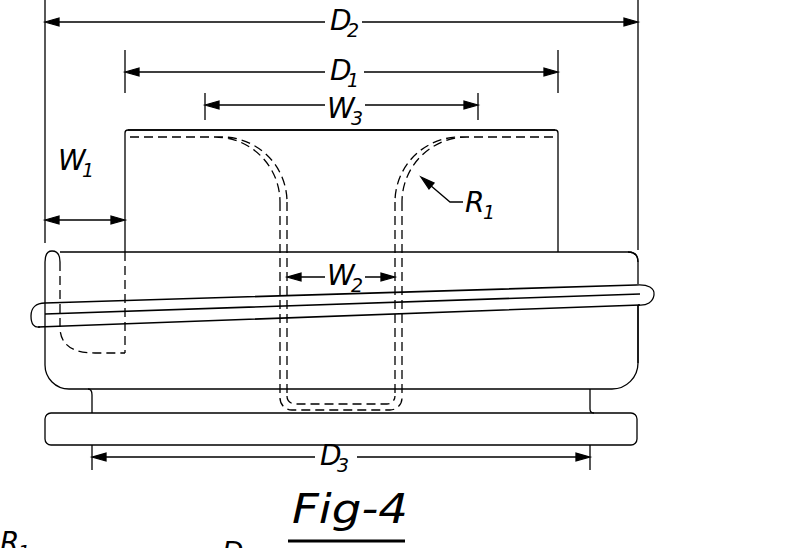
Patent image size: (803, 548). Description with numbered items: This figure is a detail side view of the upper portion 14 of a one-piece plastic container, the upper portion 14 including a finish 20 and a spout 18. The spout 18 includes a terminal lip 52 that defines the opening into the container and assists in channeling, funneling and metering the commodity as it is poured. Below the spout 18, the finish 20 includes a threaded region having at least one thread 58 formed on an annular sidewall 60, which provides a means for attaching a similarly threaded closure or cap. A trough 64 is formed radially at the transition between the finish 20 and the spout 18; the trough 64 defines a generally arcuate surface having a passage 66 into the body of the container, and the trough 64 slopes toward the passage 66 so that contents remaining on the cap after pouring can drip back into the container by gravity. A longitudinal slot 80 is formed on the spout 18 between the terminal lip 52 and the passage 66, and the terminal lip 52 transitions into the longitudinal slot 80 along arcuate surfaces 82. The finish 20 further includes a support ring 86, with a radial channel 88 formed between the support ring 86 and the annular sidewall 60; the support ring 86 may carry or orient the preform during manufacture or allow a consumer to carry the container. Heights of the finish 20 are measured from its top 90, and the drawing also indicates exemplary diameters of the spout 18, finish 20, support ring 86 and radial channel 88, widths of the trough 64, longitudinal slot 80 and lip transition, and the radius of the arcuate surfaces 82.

The upper portion 14 is at (698, 325).
The spout 18 is at (573, 152).
The finish 20 is at (687, 286).
The terminal lip 52 is at (558, 132).
The thread 58 is at (532, 313).
The annular sidewall 60 is at (632, 352).
The trough 64 is at (118, 282).
The passage 66 is at (367, 402).
The longitudinal slot 80 is at (380, 233).
The arcuate surfaces 82 is at (406, 173).
The support ring 86 is at (638, 431).
The radial channel 88 is at (593, 401).
The top 90 is at (640, 251).